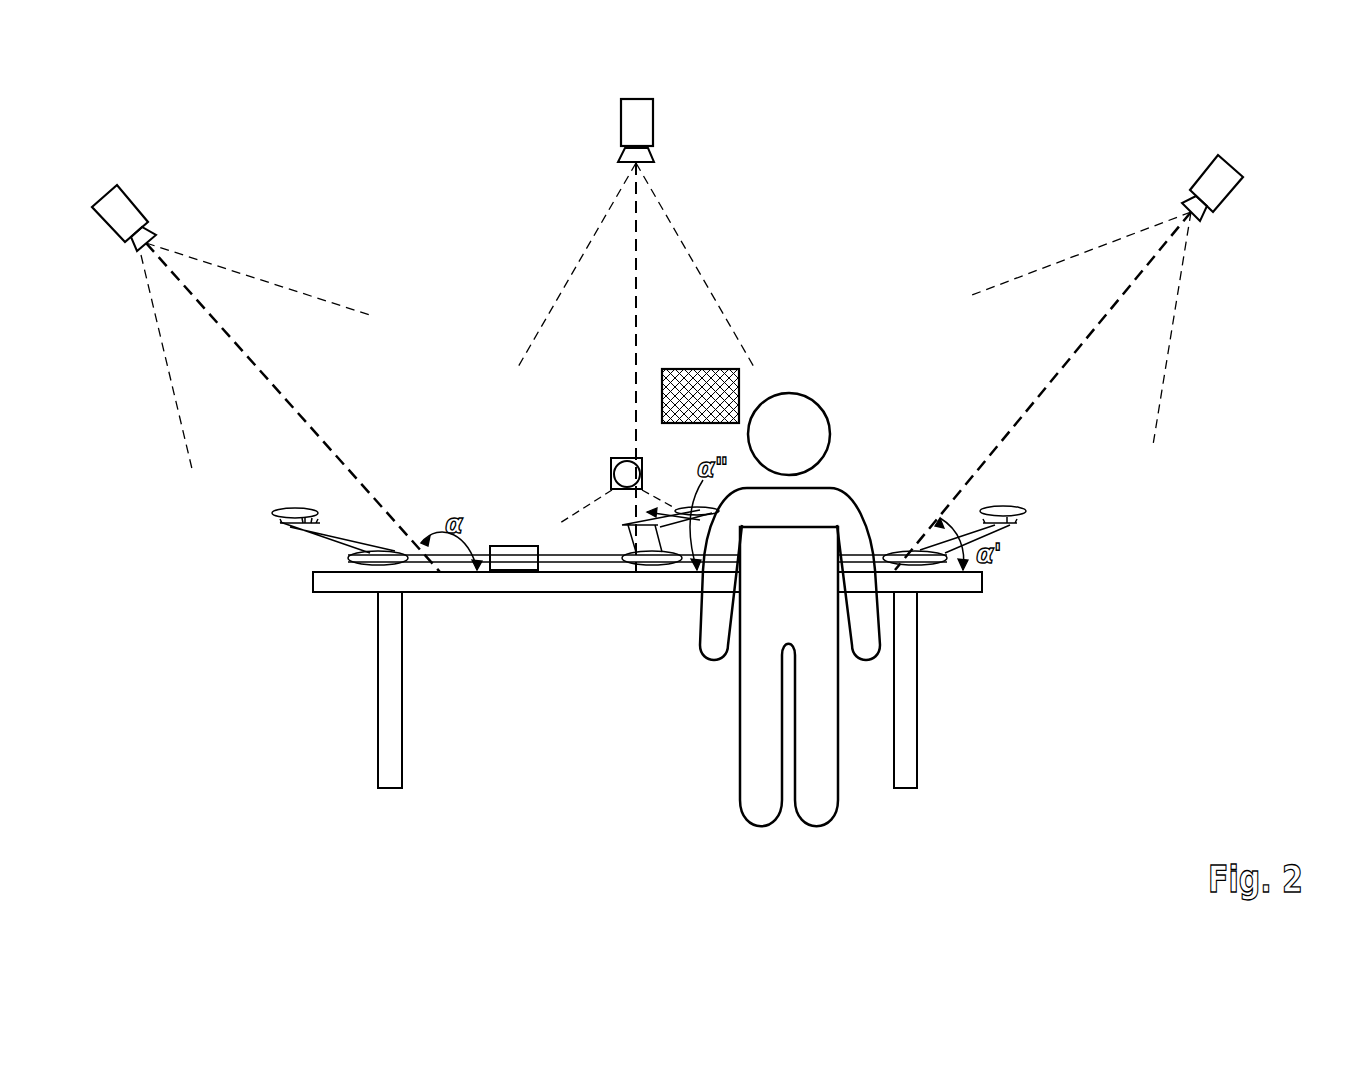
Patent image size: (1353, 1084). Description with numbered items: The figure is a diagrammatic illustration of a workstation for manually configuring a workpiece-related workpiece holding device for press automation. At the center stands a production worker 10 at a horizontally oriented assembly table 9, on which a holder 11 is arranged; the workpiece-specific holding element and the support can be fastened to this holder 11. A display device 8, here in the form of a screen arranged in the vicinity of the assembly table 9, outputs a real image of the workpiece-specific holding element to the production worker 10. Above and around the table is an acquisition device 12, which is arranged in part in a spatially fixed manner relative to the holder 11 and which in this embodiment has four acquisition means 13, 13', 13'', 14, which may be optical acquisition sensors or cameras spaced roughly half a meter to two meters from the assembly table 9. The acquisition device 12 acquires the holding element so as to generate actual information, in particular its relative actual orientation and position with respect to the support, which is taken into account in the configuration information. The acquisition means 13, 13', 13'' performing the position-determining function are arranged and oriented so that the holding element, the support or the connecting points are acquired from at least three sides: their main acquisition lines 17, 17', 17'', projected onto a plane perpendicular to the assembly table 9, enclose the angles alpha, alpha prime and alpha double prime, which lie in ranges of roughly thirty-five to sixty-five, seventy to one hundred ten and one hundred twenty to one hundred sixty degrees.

The display device 8 is at (682, 368).
The assembly table 9 is at (558, 583).
The production worker 10 is at (750, 737).
The holder 11 is at (513, 548).
The acquisition device 12 is at (1235, 340).
The acquisition means 13 is at (140, 198).
The acquisition means 13' is at (1193, 169).
The acquisition means 13'' is at (678, 130).
The acquisition means 14 is at (611, 473).
The main acquisition line 17 is at (290, 407).
The main acquisition line 17' is at (1043, 391).
The main acquisition line 17'' is at (636, 367).